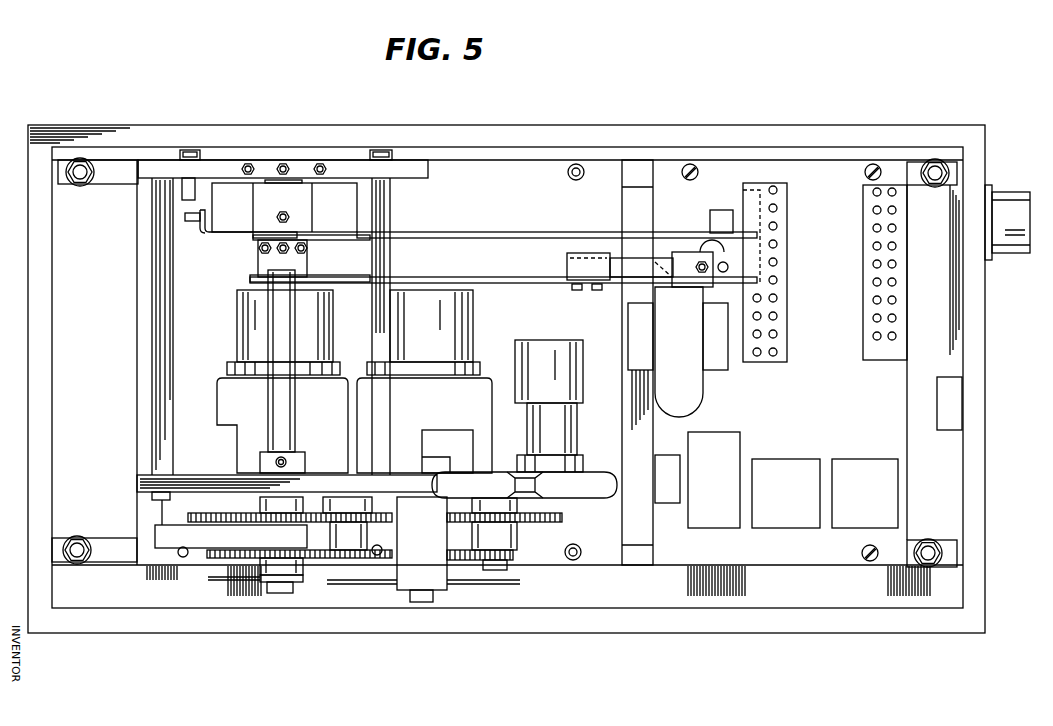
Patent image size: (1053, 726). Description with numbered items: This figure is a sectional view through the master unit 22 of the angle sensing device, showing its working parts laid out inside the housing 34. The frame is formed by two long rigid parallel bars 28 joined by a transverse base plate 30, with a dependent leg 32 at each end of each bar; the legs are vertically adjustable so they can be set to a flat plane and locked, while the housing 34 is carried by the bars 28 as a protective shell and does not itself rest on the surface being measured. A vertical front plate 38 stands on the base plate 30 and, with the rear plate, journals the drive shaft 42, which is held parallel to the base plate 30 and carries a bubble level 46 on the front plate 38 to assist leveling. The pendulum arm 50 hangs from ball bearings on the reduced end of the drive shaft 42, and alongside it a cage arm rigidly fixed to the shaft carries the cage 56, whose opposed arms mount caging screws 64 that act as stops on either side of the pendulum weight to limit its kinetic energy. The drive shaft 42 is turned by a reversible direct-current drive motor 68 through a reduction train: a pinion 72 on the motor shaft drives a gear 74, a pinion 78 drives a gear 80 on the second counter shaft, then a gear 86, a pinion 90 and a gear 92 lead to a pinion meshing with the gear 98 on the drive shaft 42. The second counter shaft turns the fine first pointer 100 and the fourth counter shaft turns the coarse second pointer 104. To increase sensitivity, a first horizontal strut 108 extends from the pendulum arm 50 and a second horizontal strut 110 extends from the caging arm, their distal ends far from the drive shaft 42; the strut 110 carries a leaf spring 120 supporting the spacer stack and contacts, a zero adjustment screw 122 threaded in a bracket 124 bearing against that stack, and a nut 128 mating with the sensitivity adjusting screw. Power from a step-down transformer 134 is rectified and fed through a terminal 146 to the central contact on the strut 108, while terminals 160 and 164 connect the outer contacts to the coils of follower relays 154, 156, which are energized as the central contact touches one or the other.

The master unit 22 is at (242, 633).
The parallel bars 28 is at (120, 184).
The base plate 30 is at (140, 355).
The dependent leg 32 is at (86, 186).
The housing 34 is at (1000, 318).
The front plate 38 is at (400, 473).
The drive shaft 42 is at (270, 406).
The bubble level 46 is at (588, 474).
The pendulum arm 50 is at (355, 195).
The cage 56 is at (343, 240).
The caging screw 64 is at (195, 224).
The drive motor 68 is at (570, 352).
The pinion 72 is at (562, 518).
The gear 74 is at (517, 528).
The pinion 78 is at (513, 555).
The gear 80 is at (460, 558).
The gear 86 is at (340, 520).
The pinion 90 is at (333, 558).
The gear 92 is at (222, 556).
The gear 98 is at (235, 512).
The first pointer 100 is at (440, 598).
The second pointer 104 is at (290, 590).
The first horizontal strut 108 is at (545, 236).
The second horizontal strut 110 is at (506, 284).
The leaf spring 120 is at (633, 255).
The zero adjustment screw 122 is at (702, 260).
The bracket 124 is at (678, 290).
The nut 128 is at (706, 522).
The step-down transformer 134 is at (698, 406).
The terminal 146 is at (288, 205).
The follower relay 154 is at (778, 522).
The follower relay 156 is at (855, 522).
The terminal 160 is at (260, 249).
The terminal 164 is at (304, 252).